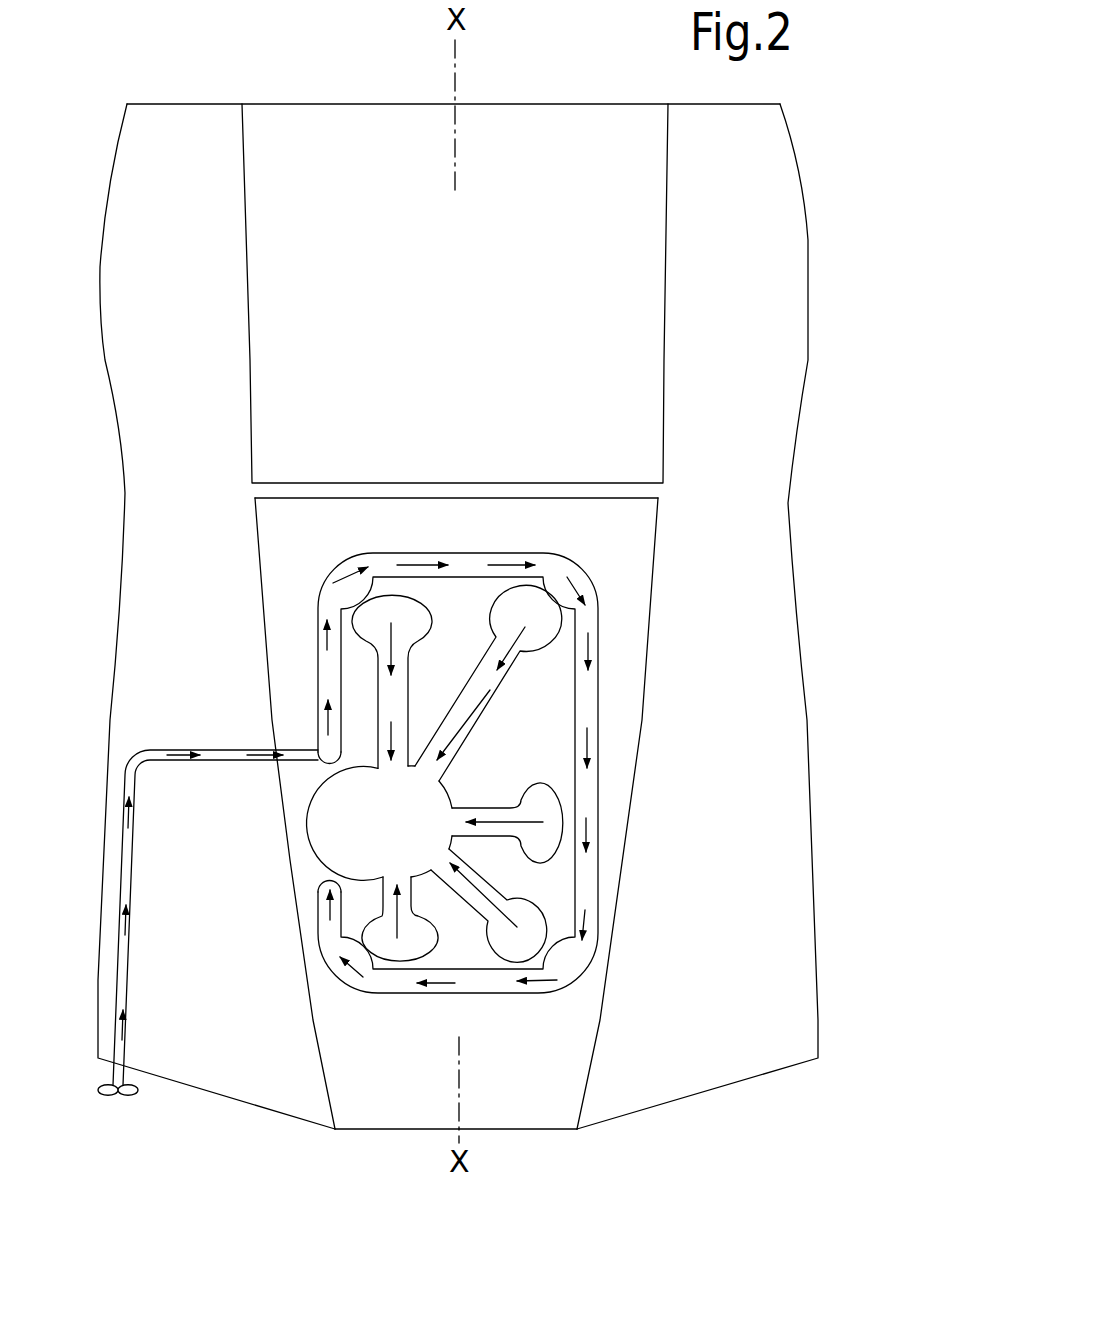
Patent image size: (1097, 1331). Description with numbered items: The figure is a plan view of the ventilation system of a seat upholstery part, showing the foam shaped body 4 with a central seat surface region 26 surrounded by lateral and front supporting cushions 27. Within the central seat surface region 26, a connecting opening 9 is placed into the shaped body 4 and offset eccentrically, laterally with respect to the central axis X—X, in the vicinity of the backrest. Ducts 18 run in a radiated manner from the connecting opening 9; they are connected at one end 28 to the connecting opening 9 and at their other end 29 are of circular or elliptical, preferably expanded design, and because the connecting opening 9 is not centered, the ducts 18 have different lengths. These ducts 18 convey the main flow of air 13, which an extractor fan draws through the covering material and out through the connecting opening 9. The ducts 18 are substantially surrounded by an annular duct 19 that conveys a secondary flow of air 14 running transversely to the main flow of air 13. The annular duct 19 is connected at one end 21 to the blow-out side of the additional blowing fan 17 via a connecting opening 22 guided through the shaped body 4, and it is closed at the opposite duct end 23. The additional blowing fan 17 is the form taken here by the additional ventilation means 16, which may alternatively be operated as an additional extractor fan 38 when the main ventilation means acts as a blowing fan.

The shaped body 4 is at (471, 610).
The connecting opening 9 is at (410, 821).
The main flow of air 13 is at (460, 725).
The secondary flow of air 14 is at (422, 751).
The additional ventilation means 16 is at (162, 1120).
The additional blowing fan 17 is at (162, 1120).
The additional extractor fan 38 is at (122, 1098).
The ducts 18 is at (492, 683).
The annular duct 19 is at (545, 562).
The end 21 is at (318, 747).
The connecting opening 22 is at (318, 762).
The duct end 23 is at (318, 881).
The central seat surface region 26 is at (627, 622).
The lateral and front supporting cushions 27 is at (493, 130).
The end 28 is at (437, 770).
The other end 29 is at (563, 805).